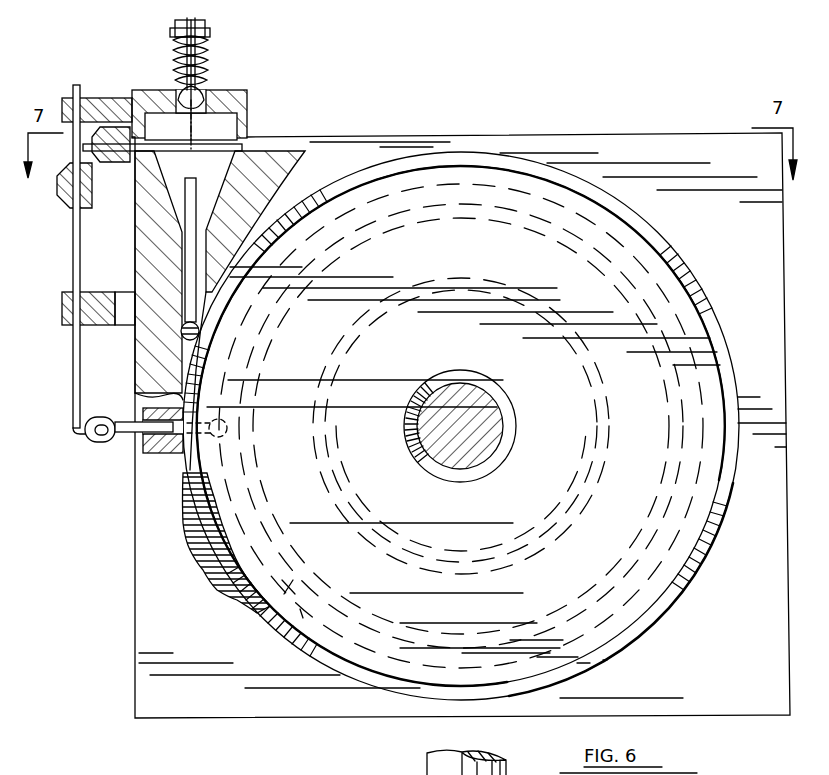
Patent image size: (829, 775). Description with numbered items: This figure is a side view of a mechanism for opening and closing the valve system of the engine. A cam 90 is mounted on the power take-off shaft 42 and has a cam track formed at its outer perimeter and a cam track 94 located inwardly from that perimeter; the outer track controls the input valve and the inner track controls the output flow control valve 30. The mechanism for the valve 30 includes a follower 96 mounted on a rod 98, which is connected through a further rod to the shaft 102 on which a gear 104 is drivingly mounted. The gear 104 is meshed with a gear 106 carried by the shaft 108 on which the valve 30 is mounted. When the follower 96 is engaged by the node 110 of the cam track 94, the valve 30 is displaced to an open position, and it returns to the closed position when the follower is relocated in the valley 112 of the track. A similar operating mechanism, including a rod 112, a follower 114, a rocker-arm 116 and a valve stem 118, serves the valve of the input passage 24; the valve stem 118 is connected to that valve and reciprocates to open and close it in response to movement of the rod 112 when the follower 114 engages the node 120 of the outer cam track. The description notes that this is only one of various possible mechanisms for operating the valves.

The input passage 24 is at (247, 100).
The output flow control valve 30 is at (226, 190).
The power take-off shaft 42 is at (441, 392).
The cam 90 is at (697, 278).
The cam track 94 is at (303, 613).
The follower 96 is at (218, 437).
The rod 98 is at (140, 449).
The shaft 102 is at (75, 360).
The gear 104 is at (72, 200).
The gear 106 is at (108, 162).
The shaft 108 is at (250, 162).
The node 110 is at (288, 588).
The valley 112 is at (188, 242).
The follower 114 is at (184, 335).
The rocker-arm 116 is at (210, 38).
The valve stem 118 is at (178, 93).
The node 120 is at (180, 520).